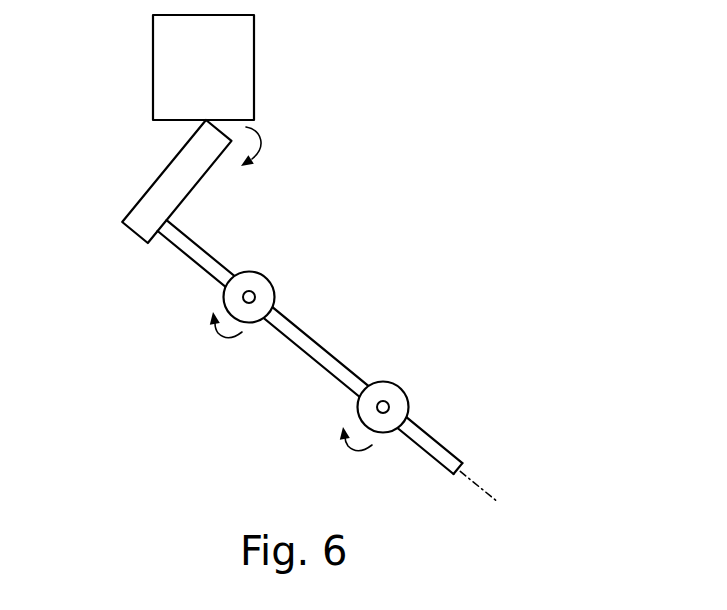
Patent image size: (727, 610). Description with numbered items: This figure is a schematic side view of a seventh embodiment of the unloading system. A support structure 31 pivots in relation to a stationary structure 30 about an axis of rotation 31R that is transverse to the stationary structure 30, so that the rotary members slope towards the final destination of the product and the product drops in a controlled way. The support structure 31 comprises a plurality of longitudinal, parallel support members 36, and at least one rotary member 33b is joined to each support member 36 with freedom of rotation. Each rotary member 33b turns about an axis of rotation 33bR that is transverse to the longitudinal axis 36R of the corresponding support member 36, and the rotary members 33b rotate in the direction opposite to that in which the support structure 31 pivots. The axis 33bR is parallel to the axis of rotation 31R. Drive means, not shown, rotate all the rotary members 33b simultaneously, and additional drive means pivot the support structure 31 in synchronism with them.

The stationary structure 30 is at (153, 83).
The support structure 31 is at (127, 240).
The axis of rotation 31R is at (195, 120).
The rotary member 33b is at (247, 281).
The axis of rotation 33bR is at (389, 407).
The support member 36 is at (315, 350).
The longitudinal axis 36R is at (478, 487).